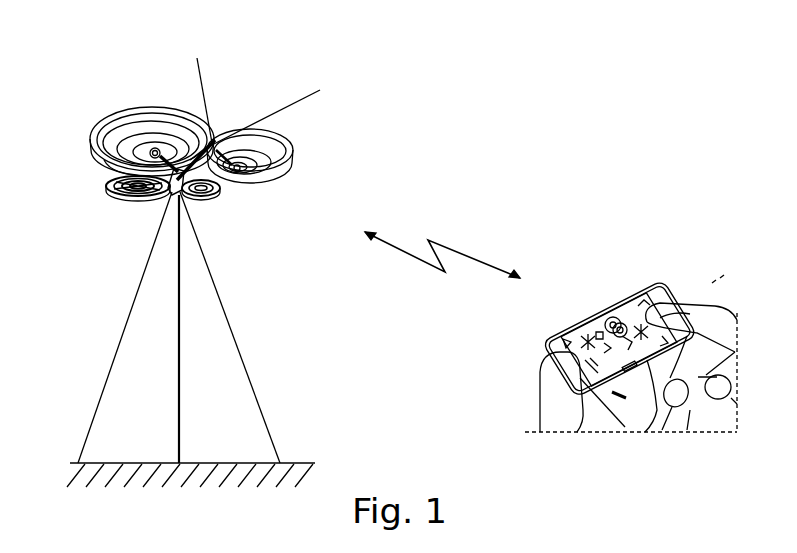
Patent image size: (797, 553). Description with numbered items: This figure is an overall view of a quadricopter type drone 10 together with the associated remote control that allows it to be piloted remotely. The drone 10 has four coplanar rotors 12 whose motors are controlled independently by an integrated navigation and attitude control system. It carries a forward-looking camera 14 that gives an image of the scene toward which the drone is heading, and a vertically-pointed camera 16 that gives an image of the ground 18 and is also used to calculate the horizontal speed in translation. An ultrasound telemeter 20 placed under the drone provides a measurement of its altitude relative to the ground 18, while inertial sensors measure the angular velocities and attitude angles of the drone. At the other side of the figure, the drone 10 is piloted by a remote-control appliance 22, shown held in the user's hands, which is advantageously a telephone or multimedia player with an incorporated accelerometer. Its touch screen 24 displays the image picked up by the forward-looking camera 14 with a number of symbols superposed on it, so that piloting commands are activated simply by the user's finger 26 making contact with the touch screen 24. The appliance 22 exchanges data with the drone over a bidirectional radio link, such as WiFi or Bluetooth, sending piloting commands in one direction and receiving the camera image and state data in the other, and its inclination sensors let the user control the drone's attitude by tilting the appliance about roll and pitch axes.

The drone 10 is at (413, 65).
The rotors 12 is at (110, 148).
The forward-looking camera 14 is at (223, 140).
The vertically-pointed camera 16 is at (167, 193).
The ground 18 is at (290, 462).
The ultrasound telemeter 20 is at (185, 197).
The remote-control appliance 22 is at (660, 270).
The touch screen 24 is at (617, 310).
The user's finger 26 is at (688, 311).